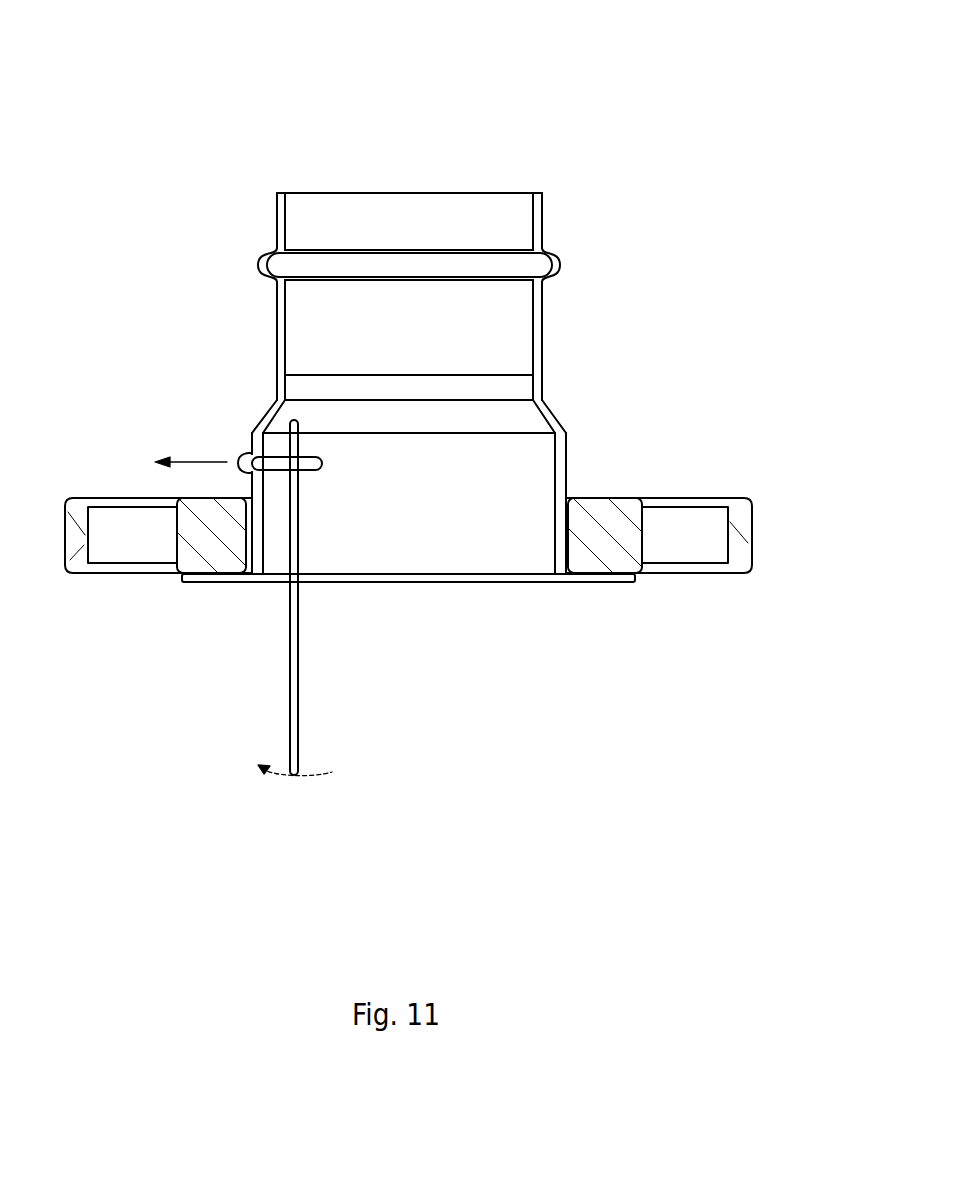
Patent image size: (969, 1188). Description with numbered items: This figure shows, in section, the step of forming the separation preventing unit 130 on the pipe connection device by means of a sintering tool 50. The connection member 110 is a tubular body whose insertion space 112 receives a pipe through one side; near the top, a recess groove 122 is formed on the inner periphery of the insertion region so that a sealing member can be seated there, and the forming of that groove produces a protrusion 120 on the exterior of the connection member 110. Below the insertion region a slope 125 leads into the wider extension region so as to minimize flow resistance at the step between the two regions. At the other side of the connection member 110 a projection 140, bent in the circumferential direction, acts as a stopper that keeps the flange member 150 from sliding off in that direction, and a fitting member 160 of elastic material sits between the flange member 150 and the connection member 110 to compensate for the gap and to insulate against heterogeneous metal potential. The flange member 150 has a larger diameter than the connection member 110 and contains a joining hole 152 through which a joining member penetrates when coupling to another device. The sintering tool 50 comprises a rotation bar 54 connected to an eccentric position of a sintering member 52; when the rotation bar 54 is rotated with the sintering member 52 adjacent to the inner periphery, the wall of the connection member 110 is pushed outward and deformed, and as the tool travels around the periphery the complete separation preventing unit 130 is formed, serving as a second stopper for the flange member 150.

The connection member 110 is at (566, 130).
The insertion space 112 is at (471, 338).
The protrusion 120 is at (556, 252).
The recess groove 122 is at (467, 270).
The slope 125 is at (548, 408).
The separation preventing unit 130 is at (240, 452).
The projection 140 is at (225, 576).
The flange member 150 is at (126, 608).
The joining hole 152 is at (678, 551).
The fitting member 160 is at (562, 540).
The sintering tool 50 is at (412, 635).
The sintering member 52 is at (310, 470).
The rotation bar 54 is at (300, 718).